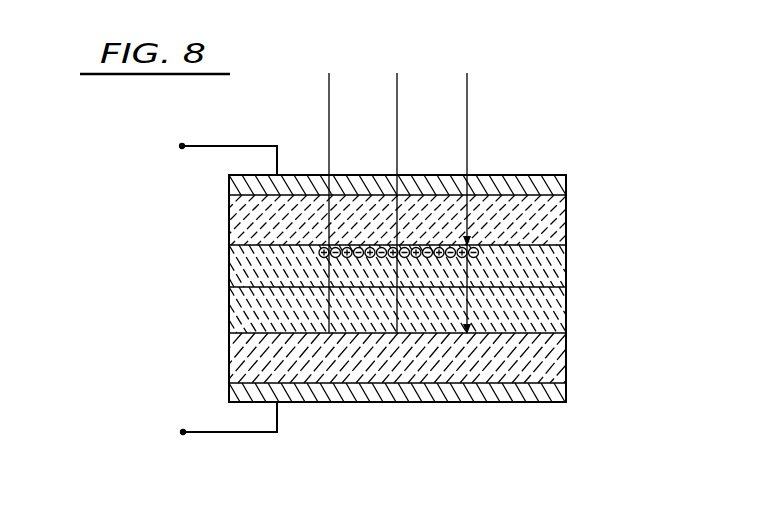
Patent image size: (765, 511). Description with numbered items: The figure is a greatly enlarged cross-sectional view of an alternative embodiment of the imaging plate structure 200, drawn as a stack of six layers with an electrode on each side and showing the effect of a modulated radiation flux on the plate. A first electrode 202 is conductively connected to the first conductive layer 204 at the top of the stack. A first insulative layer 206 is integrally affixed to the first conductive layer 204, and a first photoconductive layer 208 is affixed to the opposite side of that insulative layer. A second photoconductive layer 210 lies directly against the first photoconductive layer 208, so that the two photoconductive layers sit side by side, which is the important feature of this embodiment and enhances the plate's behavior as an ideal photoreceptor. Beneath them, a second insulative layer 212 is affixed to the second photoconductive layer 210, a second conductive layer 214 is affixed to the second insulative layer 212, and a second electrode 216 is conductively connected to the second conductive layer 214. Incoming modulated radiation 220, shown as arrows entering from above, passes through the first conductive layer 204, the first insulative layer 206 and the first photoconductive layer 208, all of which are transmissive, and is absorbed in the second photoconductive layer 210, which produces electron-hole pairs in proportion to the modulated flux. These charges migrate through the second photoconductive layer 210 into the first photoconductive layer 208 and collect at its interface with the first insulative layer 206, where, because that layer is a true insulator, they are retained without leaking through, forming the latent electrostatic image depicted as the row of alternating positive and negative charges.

The imaging plate structure 200 is at (564, 156).
The first electrode 202 is at (212, 141).
The first conductive layer 204 is at (569, 186).
The first insulative layer 206 is at (569, 228).
The first photoconductive layer 208 is at (569, 270).
The second photoconductive layer 210 is at (569, 312).
The second insulative layer 212 is at (569, 355).
The second conductive layer 214 is at (569, 396).
The second electrode 216 is at (268, 438).
The incoming modulated radiation 220 is at (331, 90).